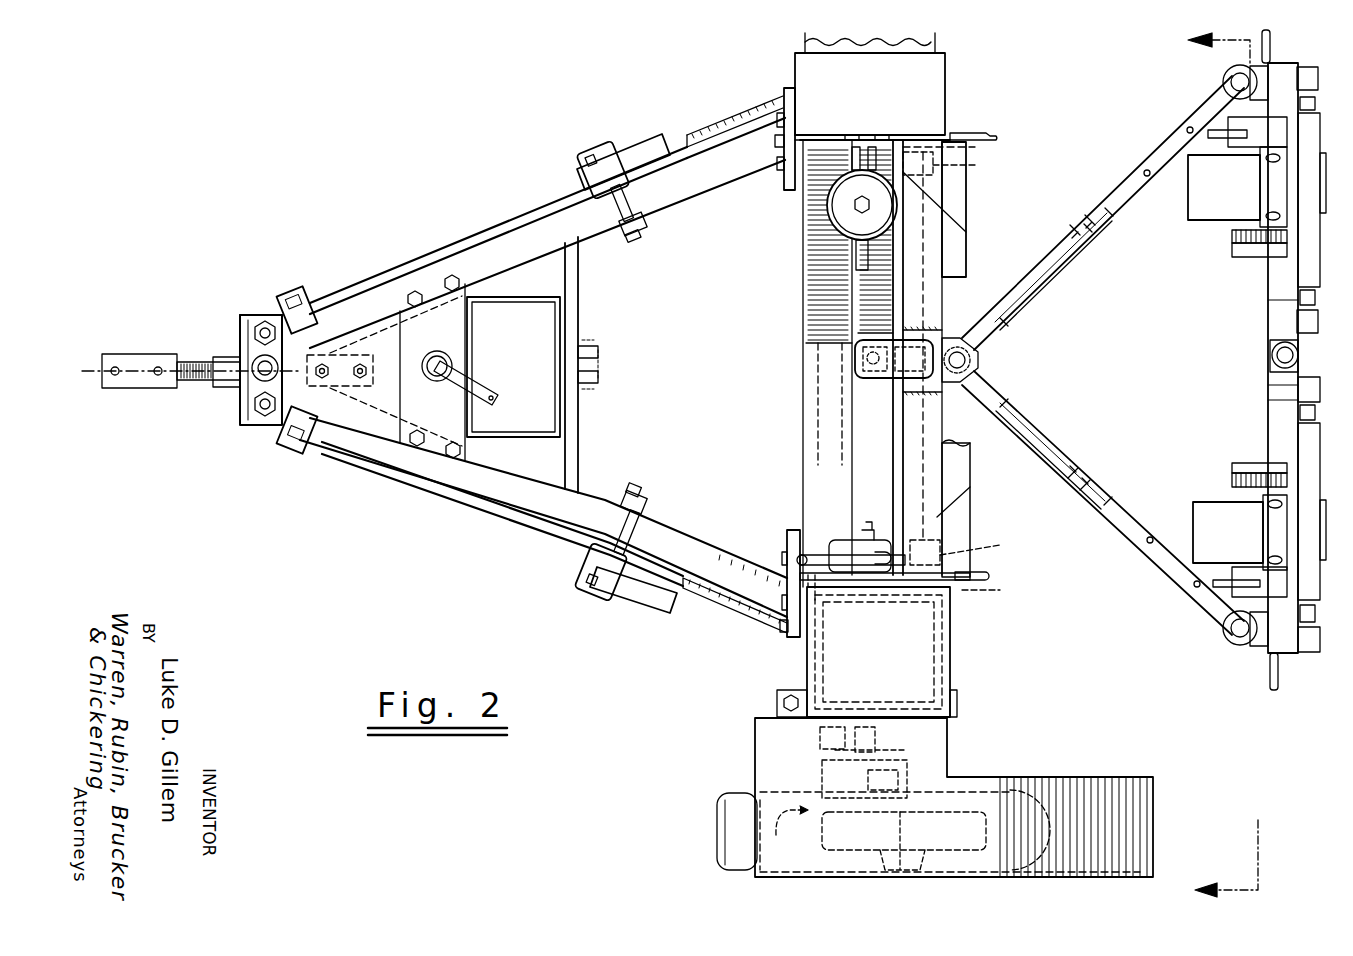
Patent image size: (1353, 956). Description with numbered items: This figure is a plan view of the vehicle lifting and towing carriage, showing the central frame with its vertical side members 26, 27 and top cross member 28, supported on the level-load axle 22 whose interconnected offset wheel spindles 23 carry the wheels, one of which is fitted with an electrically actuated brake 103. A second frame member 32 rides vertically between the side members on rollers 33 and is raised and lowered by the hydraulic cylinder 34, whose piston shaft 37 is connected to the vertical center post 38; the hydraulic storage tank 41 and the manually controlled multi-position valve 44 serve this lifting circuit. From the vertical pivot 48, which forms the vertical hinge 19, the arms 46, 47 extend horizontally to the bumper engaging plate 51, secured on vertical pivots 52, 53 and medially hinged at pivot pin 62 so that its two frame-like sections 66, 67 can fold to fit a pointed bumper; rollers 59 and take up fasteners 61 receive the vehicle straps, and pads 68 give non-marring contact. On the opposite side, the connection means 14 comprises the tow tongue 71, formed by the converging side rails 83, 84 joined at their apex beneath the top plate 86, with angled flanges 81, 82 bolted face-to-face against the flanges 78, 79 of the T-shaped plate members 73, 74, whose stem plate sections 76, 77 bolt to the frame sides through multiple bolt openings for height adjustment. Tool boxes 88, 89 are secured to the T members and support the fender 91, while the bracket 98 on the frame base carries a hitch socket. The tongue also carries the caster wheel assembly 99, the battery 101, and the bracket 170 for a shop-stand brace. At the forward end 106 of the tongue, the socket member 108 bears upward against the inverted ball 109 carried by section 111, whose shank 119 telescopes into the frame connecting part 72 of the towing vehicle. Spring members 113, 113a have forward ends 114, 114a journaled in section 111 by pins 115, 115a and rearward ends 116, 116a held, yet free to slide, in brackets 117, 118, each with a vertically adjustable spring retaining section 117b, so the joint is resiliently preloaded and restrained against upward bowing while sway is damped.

The means for connection to a towing vehicle 14 is at (215, 272).
The vertical hinge 19 is at (986, 357).
The axle 22 is at (815, 438).
The offset wheel spindles 23 is at (890, 818).
The vertical side member 26 is at (985, 580).
The vertical side member 27 is at (975, 147).
The top cross member 28 is at (960, 250).
The second frame member 32 is at (900, 470).
The rollers 33 is at (975, 165).
The hydraulic cylinder 34 is at (858, 366).
The piston shaft 37 is at (870, 338).
The vertical center post 38 is at (923, 395).
The hydraulic storage tank 41 is at (840, 212).
The multi-position valve 44 is at (848, 535).
The arm 46 is at (1112, 512).
The arm 47 is at (1120, 225).
The vertical pivot 48 is at (960, 345).
The bumper engaging plate 51 is at (1265, 396).
The vertical pivot 52 is at (1222, 628).
The vertical pivot 53 is at (1222, 82).
The rollers 59 is at (1290, 272).
The take up fasteners 61 is at (1226, 248).
The pivot pin 62 is at (1270, 355).
The frame-like section 66 is at (1266, 385).
The frame-like section 67 is at (1264, 298).
The pads 68 is at (1304, 68).
The tow tongue 71 is at (504, 170).
The frame connecting part 72 is at (166, 348).
The T-shaped plate member 73 is at (796, 522).
The T-shaped plate member 74 is at (790, 206).
The stem plate section 76 is at (862, 590).
The stem plate section 77 is at (908, 132).
The flange 78 is at (782, 628).
The flange 79 is at (790, 182).
The flange 81 is at (786, 548).
The flange 82 is at (778, 160).
The side rail 83 is at (680, 532).
The side rail 84 is at (600, 232).
The top plate 86 is at (368, 430).
The tool box 88 is at (960, 640).
The tool box 89 is at (952, 92).
The fender 91 is at (1035, 800).
The bracket 98 is at (806, 320).
The caster wheel assembly 99 is at (438, 352).
The battery 101 is at (513, 367).
The brake 103 is at (928, 799).
The forward end of the tongue 106 is at (333, 346).
The socket member 108 is at (317, 390).
The inverted ball 109 is at (252, 360).
The section 111 is at (236, 408).
The spring member 113 is at (445, 505).
The spring member 113a is at (408, 262).
The forward end of spring member 114 is at (300, 447).
The forward end of spring member 114a is at (322, 292).
The pin 115 is at (262, 418).
The pin 115a is at (264, 320).
The rearward end of spring member 116 is at (632, 595).
The rearward end of spring member 116a is at (648, 146).
The bracket 117 is at (580, 590).
The spring retaining section 117b is at (600, 600).
The bracket 118 is at (603, 142).
The shank 119 is at (160, 378).
The bracket 170 is at (598, 377).